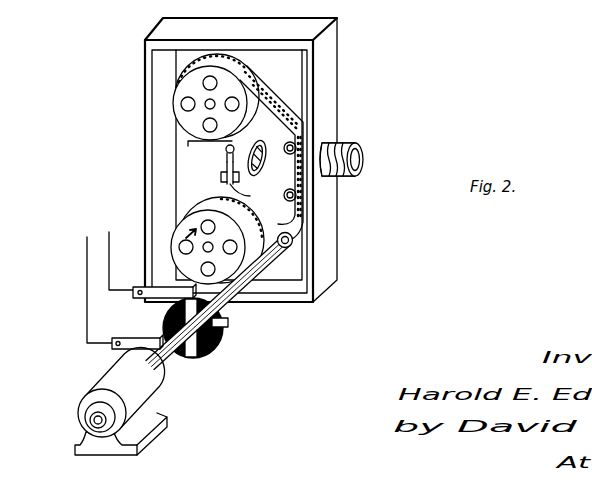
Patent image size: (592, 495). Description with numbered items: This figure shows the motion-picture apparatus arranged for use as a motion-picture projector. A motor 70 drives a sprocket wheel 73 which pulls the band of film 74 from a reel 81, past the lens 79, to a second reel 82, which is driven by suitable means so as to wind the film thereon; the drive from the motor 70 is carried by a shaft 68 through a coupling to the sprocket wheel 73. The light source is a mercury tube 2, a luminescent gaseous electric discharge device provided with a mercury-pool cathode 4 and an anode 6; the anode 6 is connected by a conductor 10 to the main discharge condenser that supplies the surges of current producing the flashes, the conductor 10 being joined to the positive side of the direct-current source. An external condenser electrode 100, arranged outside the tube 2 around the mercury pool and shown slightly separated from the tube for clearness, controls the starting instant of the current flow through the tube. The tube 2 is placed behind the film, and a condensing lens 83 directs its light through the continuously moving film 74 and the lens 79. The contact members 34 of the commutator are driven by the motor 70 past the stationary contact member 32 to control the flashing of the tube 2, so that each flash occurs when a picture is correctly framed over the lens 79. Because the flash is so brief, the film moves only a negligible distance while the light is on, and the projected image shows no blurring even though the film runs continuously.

The mercury tube 2 is at (225, 160).
The mercury-pool cathode 4 is at (250, 196).
The anode 6 is at (226, 143).
The conductor 10 is at (190, 143).
The stationary contact member 32 is at (157, 293).
The contact members 34 is at (226, 322).
The motor shaft 68 is at (163, 368).
The motor 70 is at (83, 404).
The sprocket wheel 73 is at (283, 255).
The film 74 is at (287, 103).
The lens 79 is at (343, 172).
The reel 81 is at (185, 90).
The reel 82 is at (178, 239).
The condensing lens 83 is at (268, 135).
The external condenser electrode 100 is at (221, 178).